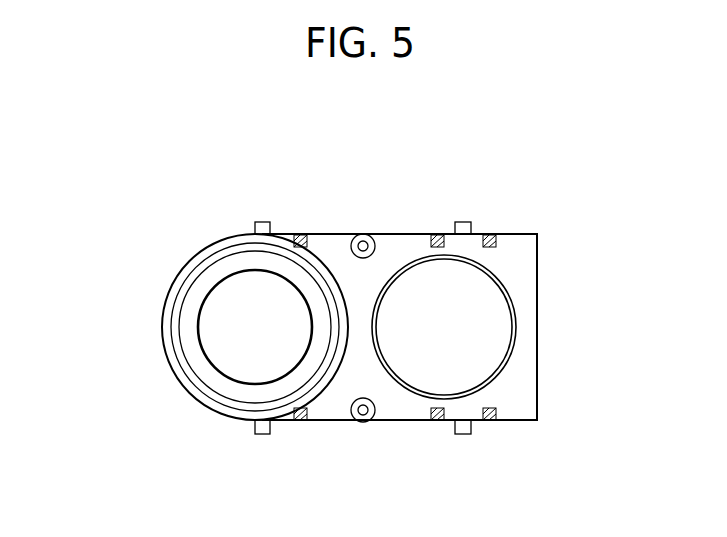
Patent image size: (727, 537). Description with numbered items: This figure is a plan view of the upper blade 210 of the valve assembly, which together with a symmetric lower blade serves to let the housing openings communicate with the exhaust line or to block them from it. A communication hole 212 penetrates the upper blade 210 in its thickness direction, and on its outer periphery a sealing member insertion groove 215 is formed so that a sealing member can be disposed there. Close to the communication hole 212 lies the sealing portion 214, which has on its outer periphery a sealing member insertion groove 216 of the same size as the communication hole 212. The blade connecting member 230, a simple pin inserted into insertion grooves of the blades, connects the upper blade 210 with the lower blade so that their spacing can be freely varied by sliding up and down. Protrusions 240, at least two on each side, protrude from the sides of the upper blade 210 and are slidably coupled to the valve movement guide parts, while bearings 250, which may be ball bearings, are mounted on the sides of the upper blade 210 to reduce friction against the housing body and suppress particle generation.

The upper blade 210 is at (426, 215).
The communication hole 212 is at (243, 332).
The sealing portion 214 is at (476, 343).
The sealing member insertion groove 215 is at (183, 361).
The sealing member insertion groove 216 is at (512, 302).
The blade connecting member 230 is at (362, 412).
The protrusion 240 is at (263, 233).
The bearing 250 is at (487, 235).